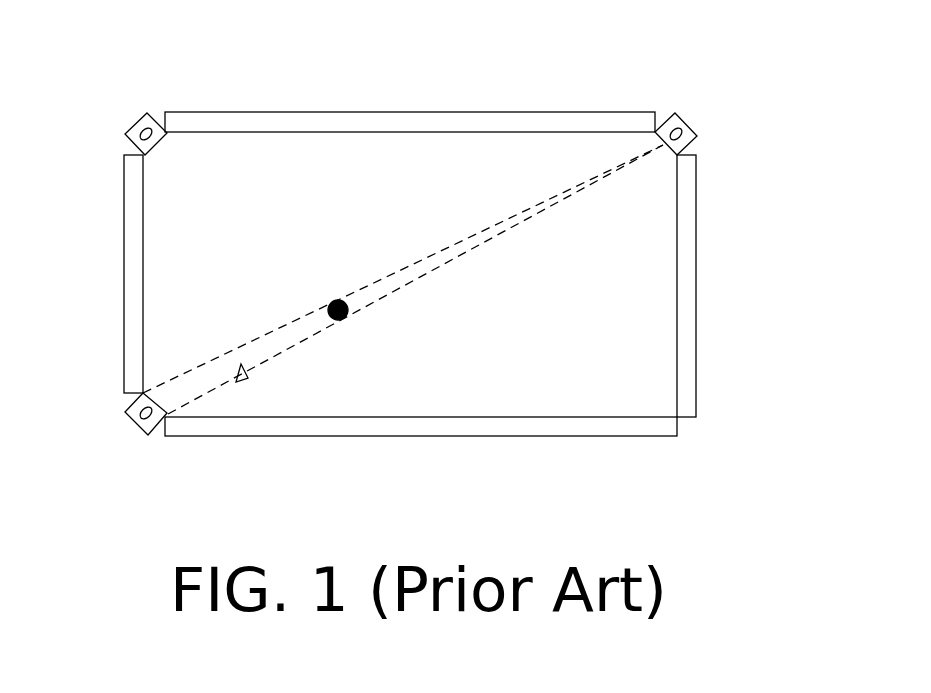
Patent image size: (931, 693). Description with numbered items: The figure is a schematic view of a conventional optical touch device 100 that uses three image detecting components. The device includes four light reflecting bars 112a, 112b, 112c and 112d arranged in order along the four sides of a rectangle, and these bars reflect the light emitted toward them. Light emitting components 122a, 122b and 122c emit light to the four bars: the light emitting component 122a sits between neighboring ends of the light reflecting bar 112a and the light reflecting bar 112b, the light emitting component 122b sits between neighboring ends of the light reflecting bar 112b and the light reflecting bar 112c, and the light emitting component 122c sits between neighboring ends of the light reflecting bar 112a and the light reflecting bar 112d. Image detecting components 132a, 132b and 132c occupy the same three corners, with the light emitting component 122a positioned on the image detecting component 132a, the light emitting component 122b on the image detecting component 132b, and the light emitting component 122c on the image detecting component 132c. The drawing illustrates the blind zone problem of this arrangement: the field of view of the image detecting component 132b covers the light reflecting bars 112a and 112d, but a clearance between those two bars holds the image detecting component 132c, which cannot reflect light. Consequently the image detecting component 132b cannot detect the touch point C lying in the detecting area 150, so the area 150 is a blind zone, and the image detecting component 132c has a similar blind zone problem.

The optical touch device 100 is at (786, 487).
The light reflecting bar 112a is at (130, 269).
The light reflecting bar 112b is at (388, 120).
The light reflecting bar 112c is at (688, 292).
The light reflecting bar 112d is at (437, 432).
The light emitting component 122a is at (148, 113).
The light emitting component 122b is at (673, 113).
The light emitting component 122c is at (148, 437).
The image detecting component 132a is at (125, 134).
The image detecting component 132b is at (697, 137).
The image detecting component 132c is at (125, 412).
The detecting area 150 is at (243, 385).
The touch point C is at (339, 298).